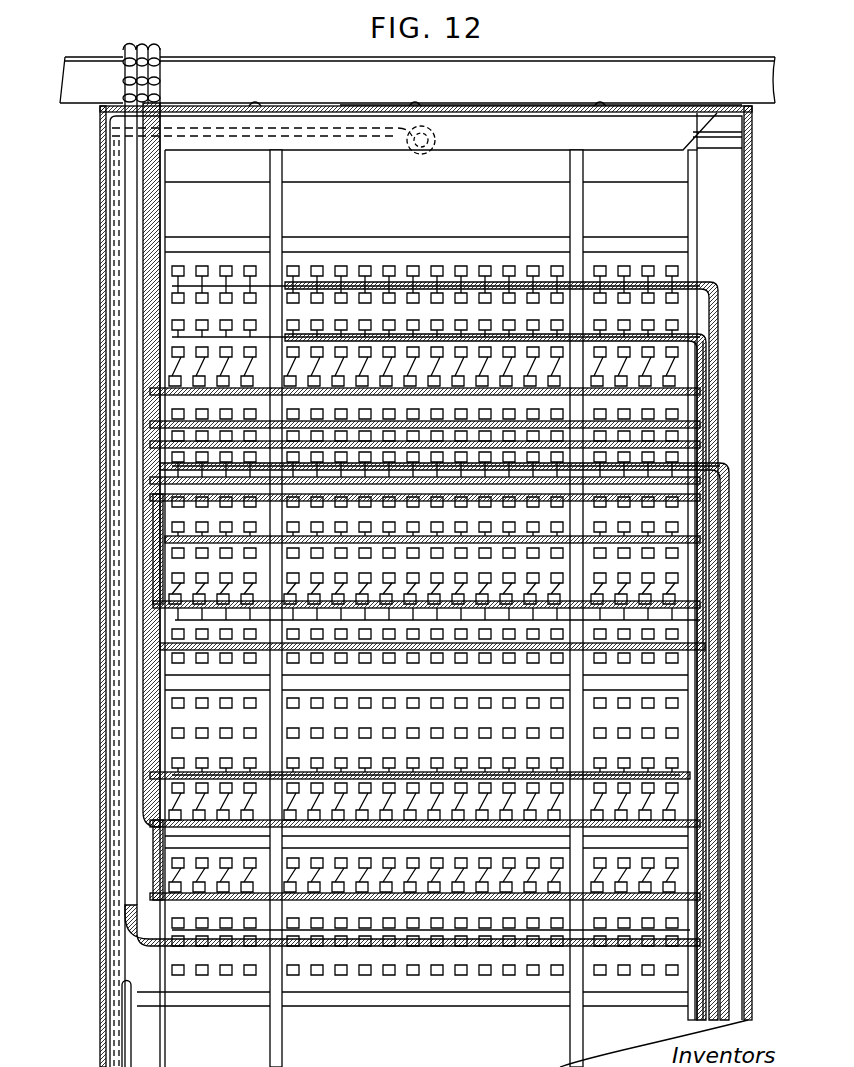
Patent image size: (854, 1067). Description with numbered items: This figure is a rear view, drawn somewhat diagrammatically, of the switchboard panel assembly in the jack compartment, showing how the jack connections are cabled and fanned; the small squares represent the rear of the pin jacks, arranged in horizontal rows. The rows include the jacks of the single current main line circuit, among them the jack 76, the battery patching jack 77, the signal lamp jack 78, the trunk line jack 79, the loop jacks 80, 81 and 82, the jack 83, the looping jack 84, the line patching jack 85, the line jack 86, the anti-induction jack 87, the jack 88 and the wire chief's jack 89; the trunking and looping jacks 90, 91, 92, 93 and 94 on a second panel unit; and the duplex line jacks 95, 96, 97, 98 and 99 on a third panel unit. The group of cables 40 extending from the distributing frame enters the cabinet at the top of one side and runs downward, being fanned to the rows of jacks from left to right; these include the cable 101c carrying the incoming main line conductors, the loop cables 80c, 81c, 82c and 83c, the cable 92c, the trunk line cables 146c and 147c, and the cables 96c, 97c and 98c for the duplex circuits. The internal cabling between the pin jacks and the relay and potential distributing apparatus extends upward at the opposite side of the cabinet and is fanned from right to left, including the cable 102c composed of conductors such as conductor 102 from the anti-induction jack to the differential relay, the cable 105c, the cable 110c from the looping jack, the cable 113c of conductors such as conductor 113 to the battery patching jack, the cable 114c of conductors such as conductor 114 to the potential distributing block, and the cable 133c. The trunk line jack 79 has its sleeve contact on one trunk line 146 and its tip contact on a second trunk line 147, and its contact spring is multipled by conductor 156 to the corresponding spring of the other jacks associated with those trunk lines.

The cables 40 is at (160, 52).
The conductor 114 is at (368, 283).
The conductor 113 is at (370, 338).
The jack 95 is at (678, 270).
The jack 76 is at (678, 298).
The battery patching jack 77 is at (678, 326).
The signal lamp jack 78 is at (678, 352).
The trunk line jack 79 is at (675, 382).
The loop jack 80 is at (678, 414).
The loop jack 81 is at (678, 437).
The loop jack 82 is at (678, 456).
The jack 83 is at (678, 500).
The looping jack 84 is at (678, 527).
The line patching jack 85 is at (678, 553).
The line jack 86 is at (678, 578).
The anti-induction jack 87 is at (675, 600).
The jack 88 is at (678, 634).
The wire chief's jack 89 is at (678, 660).
The jack 90 is at (678, 703).
The jack 91 is at (678, 733).
The jack 92 is at (678, 763).
The jack 93 is at (678, 789).
The jack 94 is at (675, 816).
The jack 96 is at (675, 887).
The jack 97 is at (678, 923).
The jack 98 is at (678, 942).
The jack 99 is at (678, 970).
The conductor 156 is at (672, 357).
The cable 114c is at (718, 304).
The cable 113c is at (706, 358).
The trunk line 146 is at (742, 384).
The trunk line 147 is at (718, 396).
The cable 105c is at (727, 472).
The cable 110c is at (692, 534).
The cable 102c is at (700, 624).
The cable 133c is at (705, 652).
The cable 146c is at (157, 334).
The cable 80c is at (150, 421).
The cable 81c is at (150, 444).
The cable 82c is at (150, 480).
The cable 83c is at (150, 496).
The cable 101c is at (157, 562).
The conductor 102 is at (175, 622).
The cable 92c is at (150, 774).
The cable 147c is at (143, 824).
The cable 96c is at (157, 867).
The cable 97c is at (150, 896).
The cable 98c is at (137, 925).